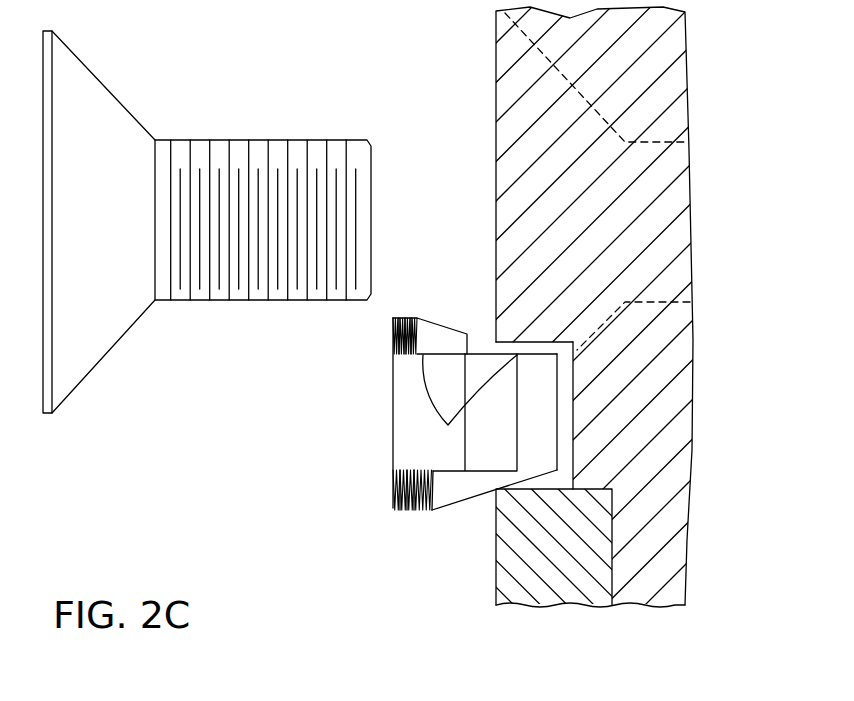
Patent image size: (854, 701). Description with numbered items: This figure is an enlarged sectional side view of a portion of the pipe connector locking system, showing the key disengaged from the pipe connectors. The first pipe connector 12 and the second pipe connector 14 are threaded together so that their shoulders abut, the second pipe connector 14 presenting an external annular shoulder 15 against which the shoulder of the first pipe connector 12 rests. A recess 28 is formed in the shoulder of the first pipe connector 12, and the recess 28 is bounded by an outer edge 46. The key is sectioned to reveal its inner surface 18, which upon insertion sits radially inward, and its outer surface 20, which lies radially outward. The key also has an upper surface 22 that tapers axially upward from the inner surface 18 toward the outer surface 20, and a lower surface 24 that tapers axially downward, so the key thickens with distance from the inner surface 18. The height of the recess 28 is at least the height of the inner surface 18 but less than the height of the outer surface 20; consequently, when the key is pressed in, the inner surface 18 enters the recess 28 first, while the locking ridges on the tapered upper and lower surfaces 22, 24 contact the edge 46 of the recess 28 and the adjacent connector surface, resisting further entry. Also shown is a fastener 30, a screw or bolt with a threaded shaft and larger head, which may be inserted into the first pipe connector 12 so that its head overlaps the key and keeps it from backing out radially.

The fastener 30 is at (203, 73).
The first pipe connector 12 is at (495, 70).
The outer edge of recess 46 is at (495, 343).
The upper surface 22 is at (398, 318).
The outer surface 20 is at (393, 412).
The recess 28 is at (575, 405).
The inner surface 18 is at (557, 453).
The lower surface 24 is at (413, 507).
The second pipe connector 14 is at (495, 575).
The external annular shoulder 15 is at (540, 487).